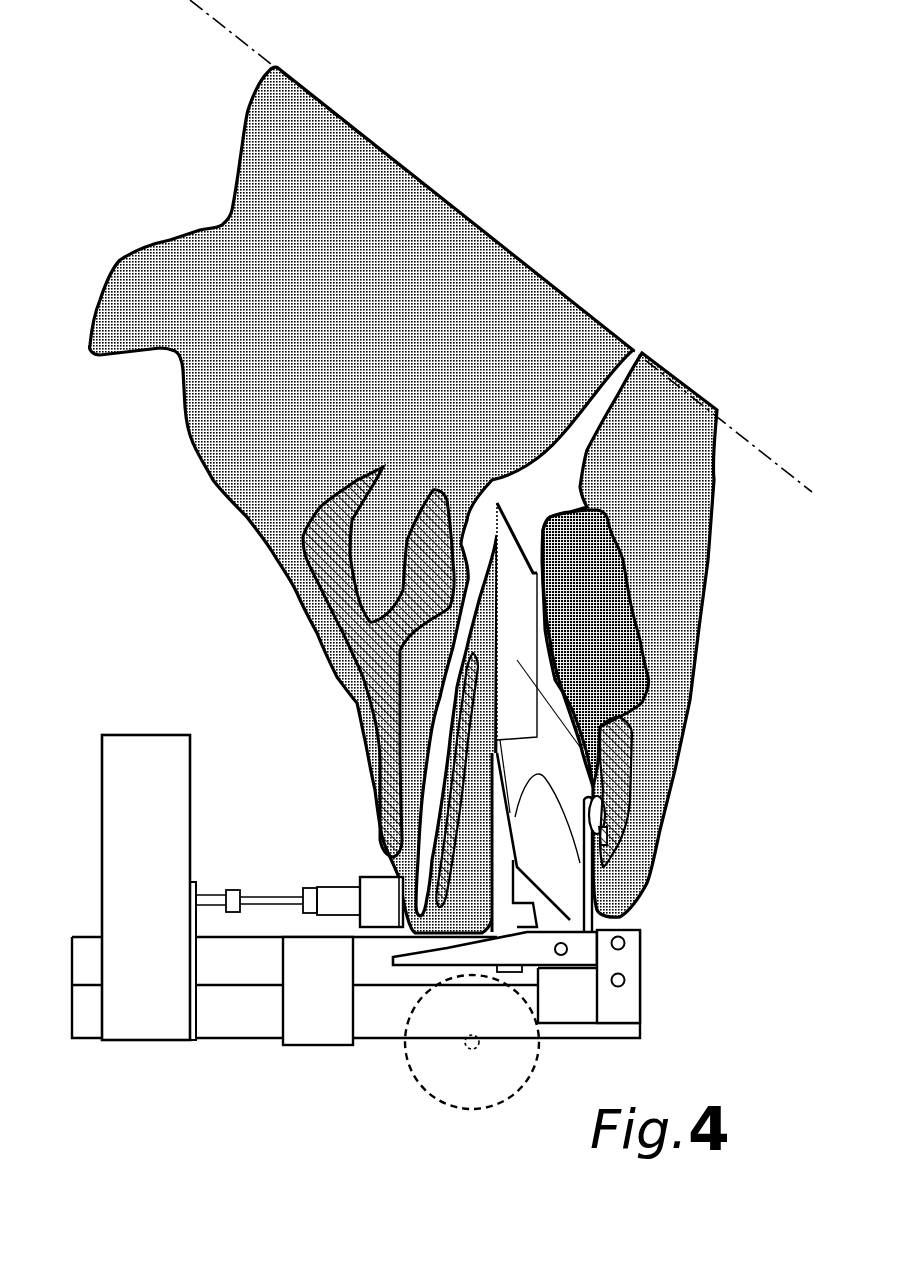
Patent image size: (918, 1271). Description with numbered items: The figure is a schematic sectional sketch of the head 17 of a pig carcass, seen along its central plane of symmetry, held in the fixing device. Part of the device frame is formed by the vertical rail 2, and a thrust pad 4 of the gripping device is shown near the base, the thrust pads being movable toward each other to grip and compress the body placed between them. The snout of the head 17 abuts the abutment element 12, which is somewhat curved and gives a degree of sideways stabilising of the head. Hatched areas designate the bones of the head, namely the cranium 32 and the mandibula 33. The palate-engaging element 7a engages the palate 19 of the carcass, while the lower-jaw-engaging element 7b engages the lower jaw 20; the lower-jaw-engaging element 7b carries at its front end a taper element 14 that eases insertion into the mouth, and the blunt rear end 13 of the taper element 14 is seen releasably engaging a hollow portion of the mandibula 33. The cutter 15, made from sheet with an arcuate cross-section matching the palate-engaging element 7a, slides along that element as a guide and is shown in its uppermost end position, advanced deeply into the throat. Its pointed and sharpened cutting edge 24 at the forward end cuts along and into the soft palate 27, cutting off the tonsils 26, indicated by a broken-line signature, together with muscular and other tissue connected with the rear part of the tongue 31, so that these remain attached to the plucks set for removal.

The vertical rail 2 is at (146, 887).
The thrust pad 4 is at (448, 1083).
The palate-engaging element 7a is at (513, 887).
The lower-jaw-engaging element 7b is at (625, 797).
The abutment element 12 is at (385, 897).
The rear end of the taper element 13 is at (610, 885).
The taper element 14 is at (605, 840).
The cutter 15 is at (613, 813).
The head of the pig carcass 17 is at (361, 500).
The palate 19 is at (460, 810).
The lower jaw 20 is at (630, 635).
The cutting edge 24 is at (497, 503).
The tonsils 26 is at (510, 577).
The soft palate 27 is at (483, 580).
The tongue 31 is at (595, 648).
The cranium 32 is at (420, 840).
The mandibula 33 is at (620, 727).